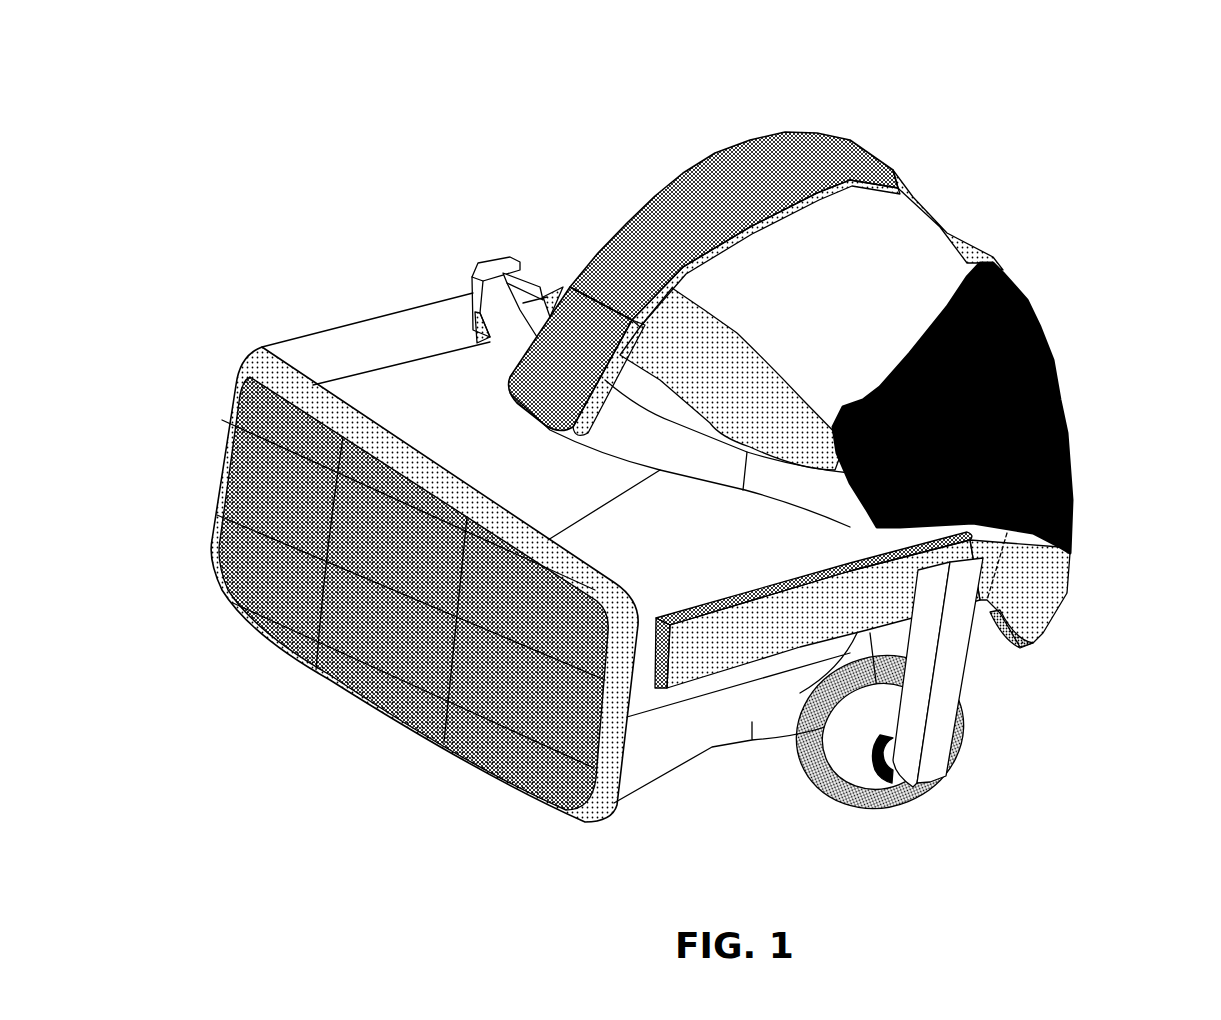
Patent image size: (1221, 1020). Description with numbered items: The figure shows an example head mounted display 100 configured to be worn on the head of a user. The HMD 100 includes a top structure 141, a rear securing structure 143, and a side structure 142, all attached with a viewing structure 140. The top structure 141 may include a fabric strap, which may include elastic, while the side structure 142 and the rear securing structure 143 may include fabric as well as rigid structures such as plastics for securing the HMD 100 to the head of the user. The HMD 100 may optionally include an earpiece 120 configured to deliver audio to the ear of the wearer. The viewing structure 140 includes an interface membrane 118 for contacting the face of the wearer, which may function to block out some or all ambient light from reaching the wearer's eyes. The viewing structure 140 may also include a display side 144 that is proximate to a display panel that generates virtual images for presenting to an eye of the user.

The head mounted display 100 is at (1197, 66).
The interface membrane 118 is at (537, 287).
The earpiece 120 is at (952, 777).
The viewing structure 140 is at (440, 353).
The top structure 141 is at (860, 150).
The side structure 142 is at (740, 333).
The rear securing structure 143 is at (1053, 357).
The display side 144 is at (410, 615).